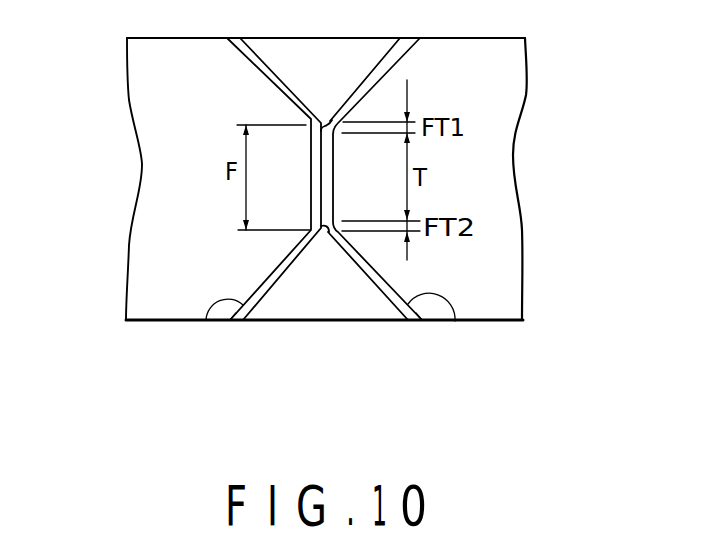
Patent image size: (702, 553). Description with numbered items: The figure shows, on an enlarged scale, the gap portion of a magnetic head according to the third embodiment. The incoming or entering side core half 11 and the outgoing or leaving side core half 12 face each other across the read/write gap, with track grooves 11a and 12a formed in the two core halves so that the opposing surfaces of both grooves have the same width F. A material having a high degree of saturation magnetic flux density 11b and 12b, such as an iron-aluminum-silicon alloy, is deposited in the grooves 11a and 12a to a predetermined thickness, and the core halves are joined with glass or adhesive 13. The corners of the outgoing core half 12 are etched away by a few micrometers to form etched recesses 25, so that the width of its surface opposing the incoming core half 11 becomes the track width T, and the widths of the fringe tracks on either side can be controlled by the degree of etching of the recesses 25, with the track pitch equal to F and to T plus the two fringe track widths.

The core half on the incoming or entering side 11 is at (141, 266).
The core half on the outgoing or leaving side 12 is at (507, 272).
The adhesive, glass or the like 13 is at (303, 50).
The etched recesses 25 is at (330, 117).
The track groove 11a is at (206, 320).
The material having a high degree of saturation magnetic flux density 11b is at (236, 322).
The track groove 12a is at (455, 321).
The material having a high degree of saturation magnetic flux density 12b is at (420, 322).